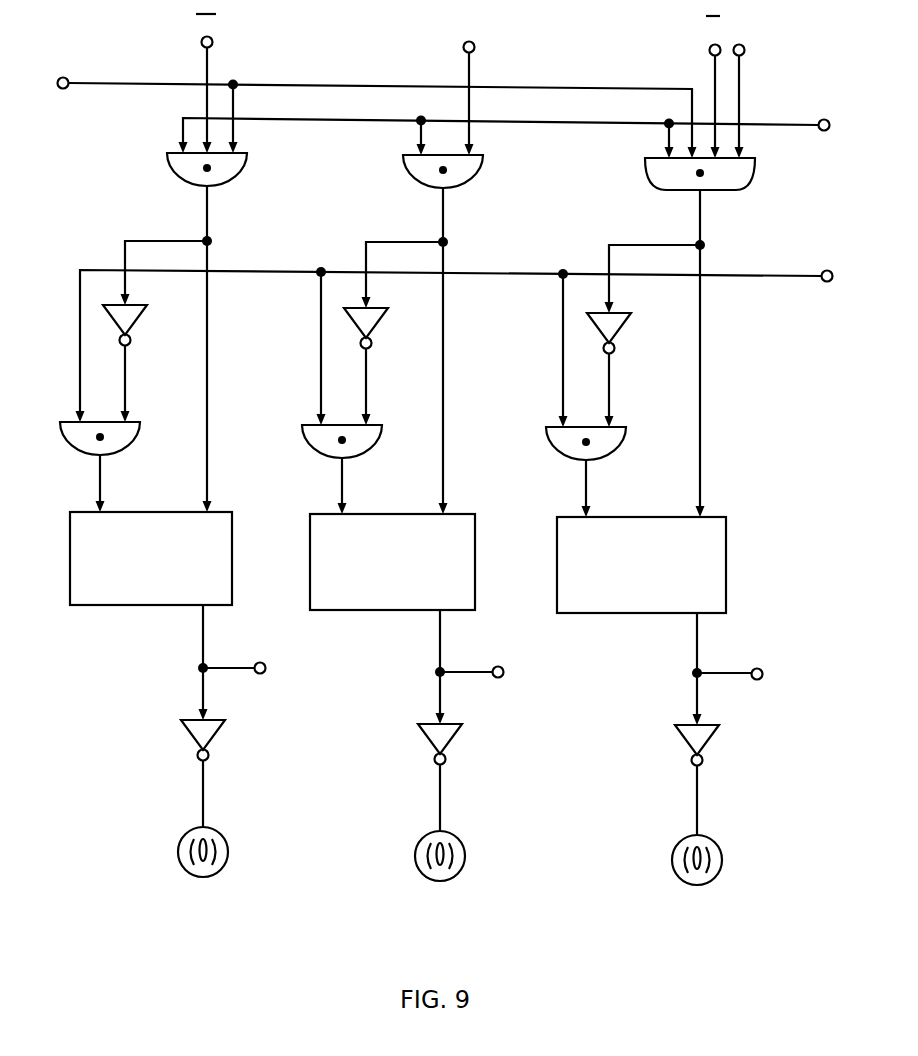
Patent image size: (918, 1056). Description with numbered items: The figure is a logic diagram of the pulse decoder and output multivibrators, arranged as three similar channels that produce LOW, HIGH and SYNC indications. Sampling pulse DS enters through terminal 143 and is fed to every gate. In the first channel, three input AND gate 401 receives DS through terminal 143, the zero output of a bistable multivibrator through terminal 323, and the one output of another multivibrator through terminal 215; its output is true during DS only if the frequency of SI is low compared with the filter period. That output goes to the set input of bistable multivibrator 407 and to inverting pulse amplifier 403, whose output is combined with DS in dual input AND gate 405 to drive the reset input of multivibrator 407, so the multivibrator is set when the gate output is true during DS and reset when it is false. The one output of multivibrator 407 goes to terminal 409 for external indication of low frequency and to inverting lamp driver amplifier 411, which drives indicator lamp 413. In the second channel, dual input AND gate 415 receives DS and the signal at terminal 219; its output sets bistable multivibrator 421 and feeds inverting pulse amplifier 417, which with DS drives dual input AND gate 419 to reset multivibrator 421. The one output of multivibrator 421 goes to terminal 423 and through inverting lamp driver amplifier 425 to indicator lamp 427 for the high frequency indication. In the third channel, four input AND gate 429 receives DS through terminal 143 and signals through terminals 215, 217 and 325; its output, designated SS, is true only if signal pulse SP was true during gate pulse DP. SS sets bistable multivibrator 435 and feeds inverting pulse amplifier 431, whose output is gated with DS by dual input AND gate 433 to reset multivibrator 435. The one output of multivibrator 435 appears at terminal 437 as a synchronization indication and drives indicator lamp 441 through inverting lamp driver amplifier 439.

The terminal 215 is at (61, 89).
The terminal 323 is at (212, 41).
The terminal 219 is at (474, 46).
The terminal 217 is at (709, 50).
The terminal 325 is at (744, 50).
The terminal 143 is at (828, 120).
The three input AND gate 401 is at (235, 165).
The inverting pulse amplifier 403 is at (133, 317).
The dual input AND gate 405 is at (77, 438).
The bistable multivibrator 407 is at (212, 538).
The terminal 409 is at (265, 664).
The inverting lamp driver amplifier 411 is at (210, 742).
The indicator lamp 413 is at (222, 851).
The dual input AND gate 415 is at (470, 166).
The inverting pulse amplifier 417 is at (374, 319).
The dual input AND gate 419 is at (318, 442).
The bistable multivibrator 421 is at (453, 543).
The terminal 423 is at (503, 668).
The inverting lamp driver amplifier 425 is at (447, 745).
The indicator lamp 427 is at (458, 856).
The four input AND gate 429 is at (738, 168).
The inverting pulse amplifier 431 is at (620, 322).
The dual input AND gate 433 is at (562, 444).
The bistable multivibrator 435 is at (710, 548).
The terminal 437 is at (762, 670).
The inverting lamp driver amplifier 439 is at (705, 747).
The indicator lamp 441 is at (715, 860).